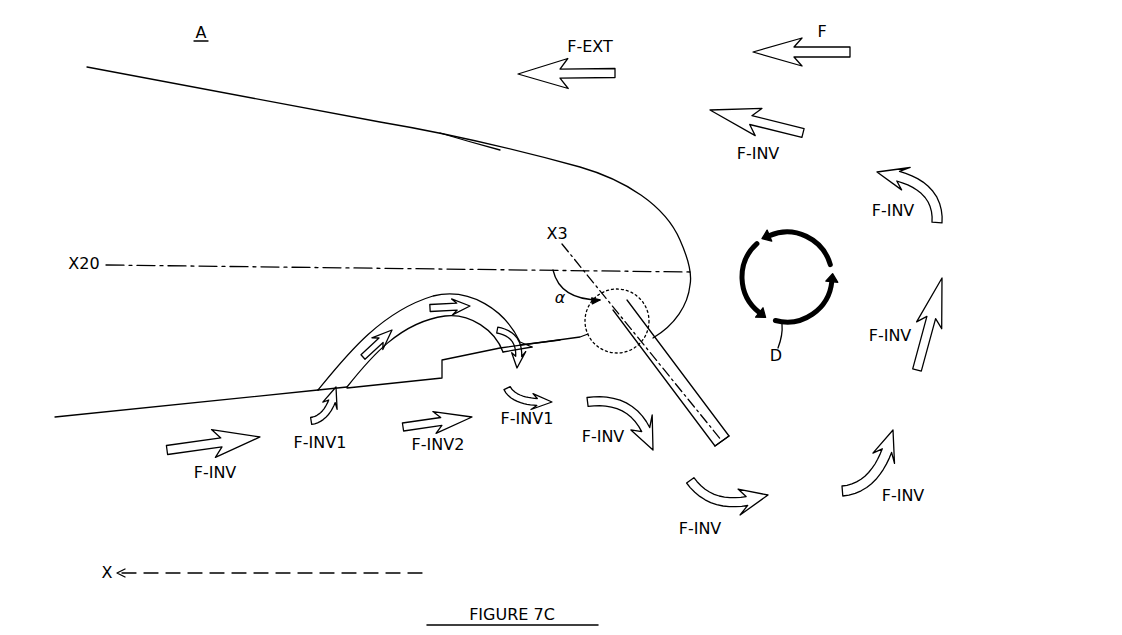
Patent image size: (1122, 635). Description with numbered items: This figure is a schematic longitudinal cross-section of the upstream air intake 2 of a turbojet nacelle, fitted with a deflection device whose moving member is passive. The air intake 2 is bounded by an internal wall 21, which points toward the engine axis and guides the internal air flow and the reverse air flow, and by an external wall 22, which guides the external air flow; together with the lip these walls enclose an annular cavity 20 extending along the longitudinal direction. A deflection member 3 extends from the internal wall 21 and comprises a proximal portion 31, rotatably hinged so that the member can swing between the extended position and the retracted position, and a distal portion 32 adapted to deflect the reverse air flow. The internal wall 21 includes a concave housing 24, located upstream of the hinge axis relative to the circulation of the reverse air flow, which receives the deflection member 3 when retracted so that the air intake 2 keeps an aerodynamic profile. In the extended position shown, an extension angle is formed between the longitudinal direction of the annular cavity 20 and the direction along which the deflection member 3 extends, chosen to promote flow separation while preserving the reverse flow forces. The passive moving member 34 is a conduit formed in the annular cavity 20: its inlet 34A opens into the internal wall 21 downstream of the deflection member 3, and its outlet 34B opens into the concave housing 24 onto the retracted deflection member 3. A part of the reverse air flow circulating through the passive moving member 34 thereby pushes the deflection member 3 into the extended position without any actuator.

The air intake 2 is at (448, 130).
The external wall 22 is at (465, 138).
The annular cavity 20 is at (288, 210).
The internal wall 21 is at (395, 383).
The concave housing 24 is at (545, 345).
The passive moving member 34 is at (373, 332).
The inlet 34A is at (315, 387).
The outlet 34B is at (498, 360).
The proximal portion 31 is at (641, 318).
The distal portion 32 is at (678, 357).
The deflection member 3 is at (735, 448).